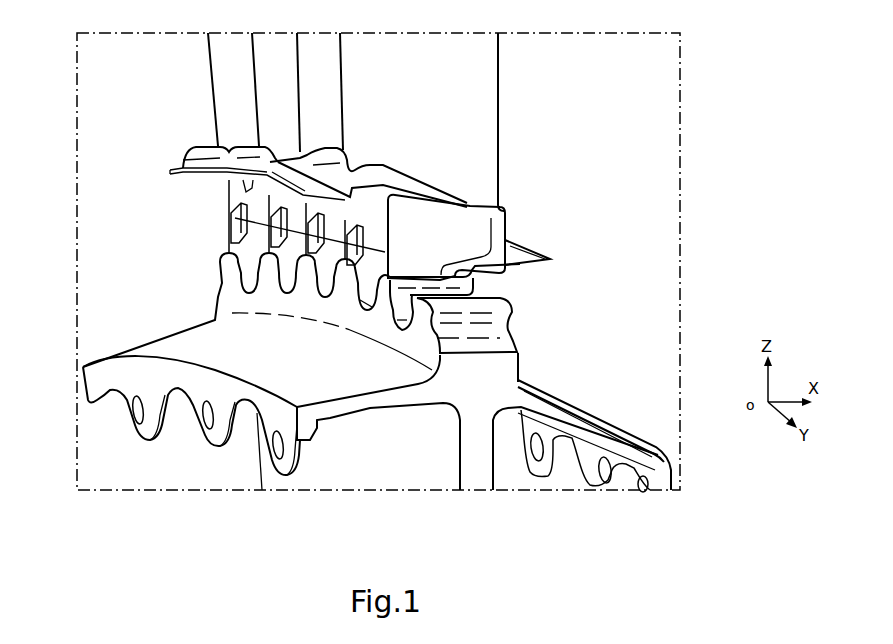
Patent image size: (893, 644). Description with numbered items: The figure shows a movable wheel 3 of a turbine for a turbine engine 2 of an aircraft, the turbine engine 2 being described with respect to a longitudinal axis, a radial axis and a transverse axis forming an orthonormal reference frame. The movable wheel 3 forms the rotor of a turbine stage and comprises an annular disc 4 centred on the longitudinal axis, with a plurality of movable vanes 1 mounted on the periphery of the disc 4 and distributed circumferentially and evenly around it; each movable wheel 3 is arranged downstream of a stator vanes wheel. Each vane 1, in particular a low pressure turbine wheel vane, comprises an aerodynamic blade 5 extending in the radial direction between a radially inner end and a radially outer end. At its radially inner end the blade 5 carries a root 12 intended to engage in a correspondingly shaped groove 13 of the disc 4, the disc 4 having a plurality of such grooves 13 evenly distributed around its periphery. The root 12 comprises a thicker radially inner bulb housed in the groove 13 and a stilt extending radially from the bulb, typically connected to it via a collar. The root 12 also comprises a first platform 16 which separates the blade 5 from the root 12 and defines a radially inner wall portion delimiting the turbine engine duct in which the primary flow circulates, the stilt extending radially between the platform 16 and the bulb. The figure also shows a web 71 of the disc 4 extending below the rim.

The vane 1 is at (485, 142).
The turbine engine 2 is at (649, 157).
The movable wheel 3 is at (596, 334).
The annular disc 4 is at (574, 402).
The aerodynamic blade 5 is at (468, 107).
The root 12 is at (551, 247).
The groove 13 is at (400, 330).
The first platform 16 is at (474, 205).
The web 71 is at (474, 478).